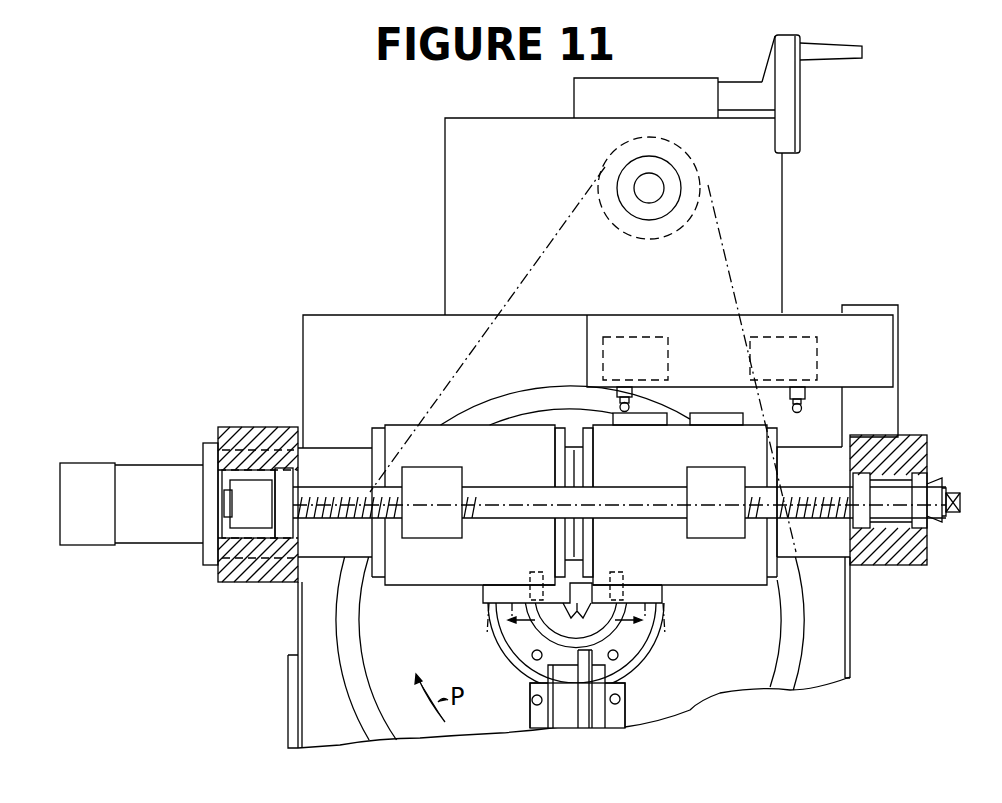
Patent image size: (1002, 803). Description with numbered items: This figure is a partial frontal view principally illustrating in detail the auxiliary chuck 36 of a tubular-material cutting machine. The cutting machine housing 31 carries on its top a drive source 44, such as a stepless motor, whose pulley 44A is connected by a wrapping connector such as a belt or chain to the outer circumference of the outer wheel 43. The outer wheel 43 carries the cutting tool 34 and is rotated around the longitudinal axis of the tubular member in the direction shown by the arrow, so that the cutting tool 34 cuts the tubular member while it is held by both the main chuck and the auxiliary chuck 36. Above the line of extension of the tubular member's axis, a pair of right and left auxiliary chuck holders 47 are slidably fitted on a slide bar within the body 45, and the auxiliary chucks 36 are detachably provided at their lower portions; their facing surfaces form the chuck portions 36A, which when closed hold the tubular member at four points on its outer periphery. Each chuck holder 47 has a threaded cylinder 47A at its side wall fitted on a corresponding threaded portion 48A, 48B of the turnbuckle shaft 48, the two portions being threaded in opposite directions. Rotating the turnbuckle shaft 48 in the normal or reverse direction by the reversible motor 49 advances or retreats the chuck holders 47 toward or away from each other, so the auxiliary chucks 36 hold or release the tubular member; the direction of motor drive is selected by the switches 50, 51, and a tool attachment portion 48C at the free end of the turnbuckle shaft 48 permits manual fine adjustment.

The cutting machine housing 31 is at (335, 695).
The cutting tool 34 is at (585, 716).
The auxiliary chuck 36 is at (424, 588).
The chuck portion 36A is at (556, 623).
The outer wheel 43 is at (403, 712).
The drive source 44 is at (763, 251).
The pulley 44A is at (657, 221).
The cross slide body 45 is at (443, 395).
The auxiliary chuck holder 47 is at (398, 430).
The threaded cylinder 47A is at (438, 515).
The turnbuckle shaft 48 is at (507, 500).
The threaded portion 48A is at (338, 470).
The threaded portion 48B is at (806, 488).
The tool attachment portion 48C is at (957, 514).
The reversible motor 49 is at (155, 510).
The switch 50 is at (668, 362).
The switch 51 is at (802, 335).